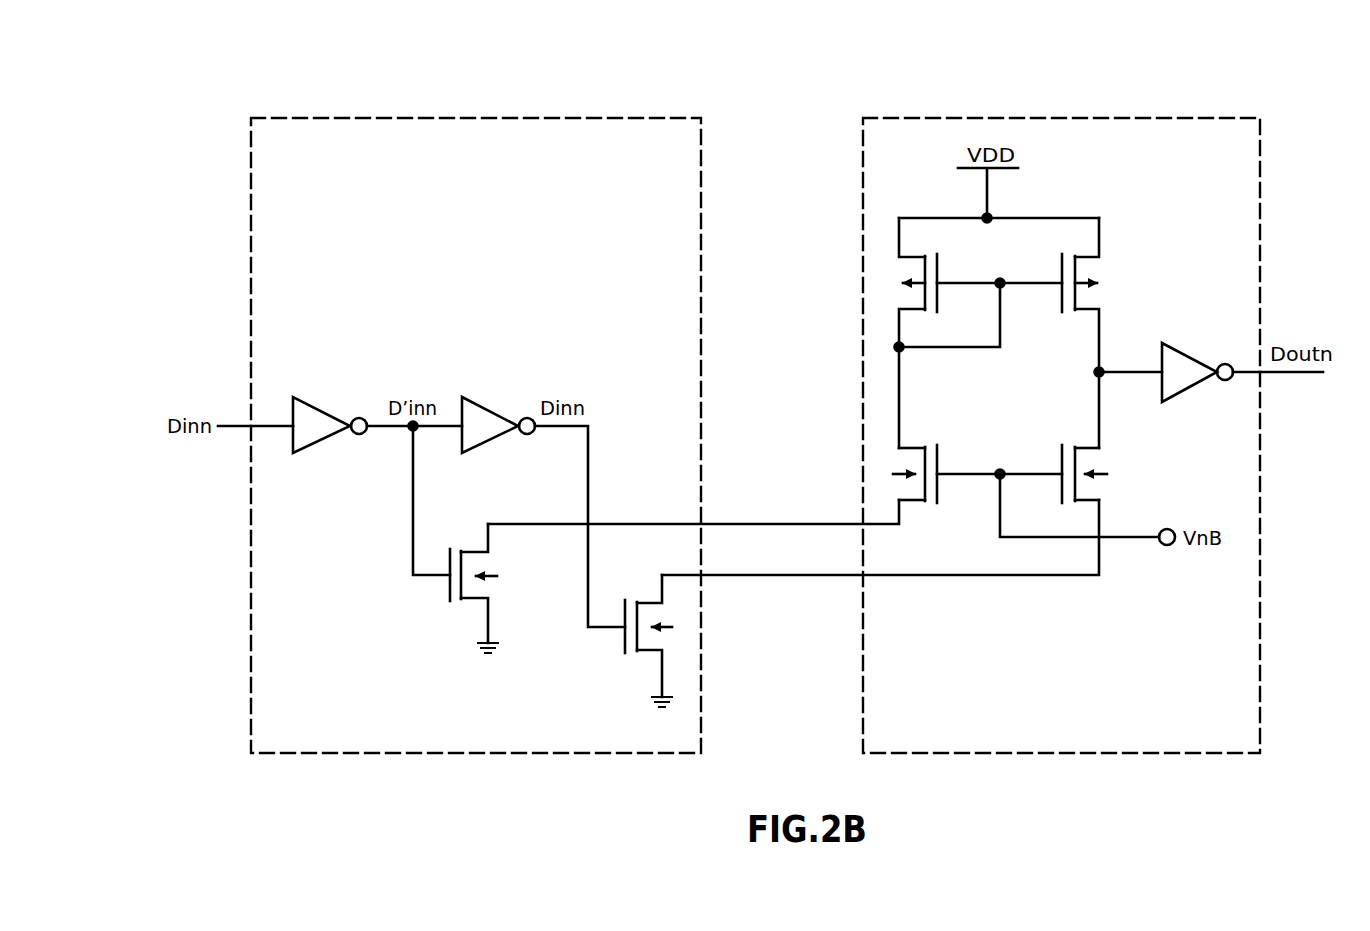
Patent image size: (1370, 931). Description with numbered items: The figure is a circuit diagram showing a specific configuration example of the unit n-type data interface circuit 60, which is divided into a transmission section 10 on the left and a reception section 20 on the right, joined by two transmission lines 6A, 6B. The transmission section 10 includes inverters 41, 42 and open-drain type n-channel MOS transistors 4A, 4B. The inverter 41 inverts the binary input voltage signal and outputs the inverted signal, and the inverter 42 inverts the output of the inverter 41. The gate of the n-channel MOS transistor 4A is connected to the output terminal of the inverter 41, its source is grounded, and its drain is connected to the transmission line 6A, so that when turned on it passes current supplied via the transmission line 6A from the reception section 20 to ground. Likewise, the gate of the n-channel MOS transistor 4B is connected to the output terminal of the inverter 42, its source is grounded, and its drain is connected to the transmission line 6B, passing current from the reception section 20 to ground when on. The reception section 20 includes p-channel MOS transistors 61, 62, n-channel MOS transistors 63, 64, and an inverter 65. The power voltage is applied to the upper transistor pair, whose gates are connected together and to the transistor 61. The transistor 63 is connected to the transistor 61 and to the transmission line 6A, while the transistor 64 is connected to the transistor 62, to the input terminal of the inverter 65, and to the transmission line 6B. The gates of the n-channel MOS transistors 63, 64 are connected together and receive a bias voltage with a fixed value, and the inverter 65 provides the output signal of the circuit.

The transmission section 10 is at (630, 113).
The reception section 20 is at (929, 113).
The inverter 41 is at (318, 404).
The inverter 42 is at (495, 404).
The open-drain type n-channel MOS transistor 4A is at (475, 603).
The open-drain type n-channel MOS transistor 4B is at (655, 655).
The transmission line 6A is at (762, 523).
The transmission line 6B is at (750, 578).
The unit n-type data interface circuit 60 is at (793, 588).
The p-channel MOS transistor 61 is at (913, 250).
The p-channel MOS transistor 62 is at (1088, 250).
The n-channel MOS transistor 63 is at (905, 448).
The n-channel MOS transistor 64 is at (1090, 448).
The inverter 65 is at (1190, 355).